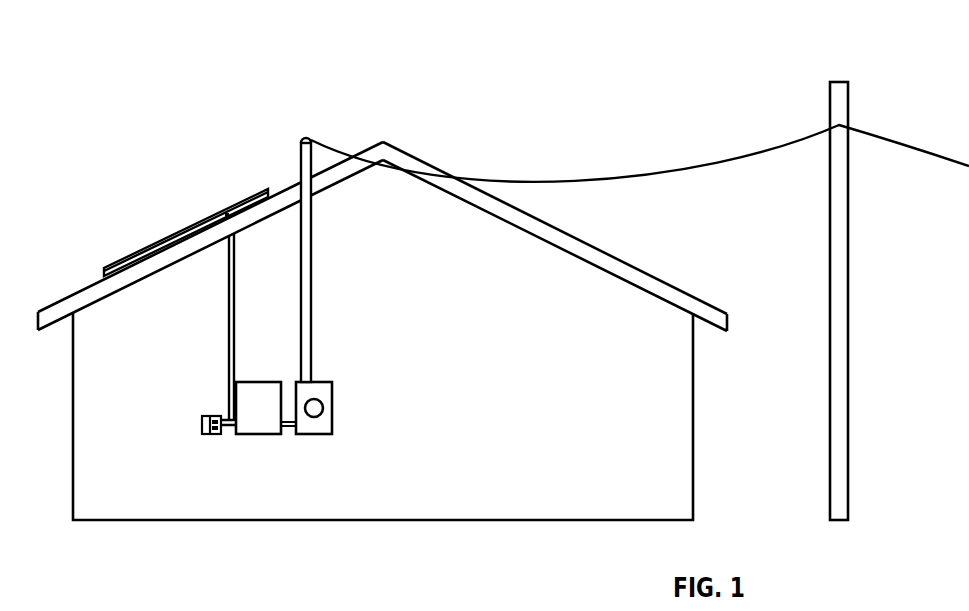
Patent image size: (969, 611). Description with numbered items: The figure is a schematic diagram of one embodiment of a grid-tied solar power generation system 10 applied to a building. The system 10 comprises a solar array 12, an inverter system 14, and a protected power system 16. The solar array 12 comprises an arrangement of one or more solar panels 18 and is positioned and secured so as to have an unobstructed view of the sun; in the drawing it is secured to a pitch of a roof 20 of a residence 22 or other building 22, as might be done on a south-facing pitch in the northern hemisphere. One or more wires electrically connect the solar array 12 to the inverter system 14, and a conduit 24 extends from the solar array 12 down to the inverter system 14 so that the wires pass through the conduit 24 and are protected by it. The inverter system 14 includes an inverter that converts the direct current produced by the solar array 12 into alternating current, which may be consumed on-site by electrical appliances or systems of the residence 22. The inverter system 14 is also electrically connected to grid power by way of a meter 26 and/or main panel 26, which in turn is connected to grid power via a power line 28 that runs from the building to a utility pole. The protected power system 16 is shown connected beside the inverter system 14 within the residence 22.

The system 10 is at (416, 73).
The solar array 12 is at (186, 220).
The inverter system 14 is at (255, 437).
The protected power system 16 is at (213, 414).
The solar panel 18 is at (252, 198).
The roof 20 is at (85, 300).
The residence 22 is at (615, 243).
The conduit 24 is at (228, 312).
The meter 26 is at (332, 398).
The power line 28 is at (548, 182).